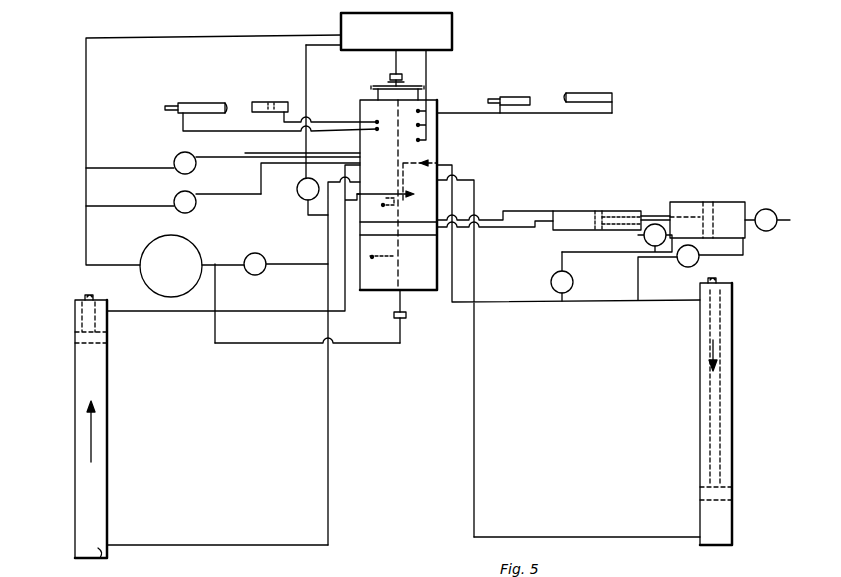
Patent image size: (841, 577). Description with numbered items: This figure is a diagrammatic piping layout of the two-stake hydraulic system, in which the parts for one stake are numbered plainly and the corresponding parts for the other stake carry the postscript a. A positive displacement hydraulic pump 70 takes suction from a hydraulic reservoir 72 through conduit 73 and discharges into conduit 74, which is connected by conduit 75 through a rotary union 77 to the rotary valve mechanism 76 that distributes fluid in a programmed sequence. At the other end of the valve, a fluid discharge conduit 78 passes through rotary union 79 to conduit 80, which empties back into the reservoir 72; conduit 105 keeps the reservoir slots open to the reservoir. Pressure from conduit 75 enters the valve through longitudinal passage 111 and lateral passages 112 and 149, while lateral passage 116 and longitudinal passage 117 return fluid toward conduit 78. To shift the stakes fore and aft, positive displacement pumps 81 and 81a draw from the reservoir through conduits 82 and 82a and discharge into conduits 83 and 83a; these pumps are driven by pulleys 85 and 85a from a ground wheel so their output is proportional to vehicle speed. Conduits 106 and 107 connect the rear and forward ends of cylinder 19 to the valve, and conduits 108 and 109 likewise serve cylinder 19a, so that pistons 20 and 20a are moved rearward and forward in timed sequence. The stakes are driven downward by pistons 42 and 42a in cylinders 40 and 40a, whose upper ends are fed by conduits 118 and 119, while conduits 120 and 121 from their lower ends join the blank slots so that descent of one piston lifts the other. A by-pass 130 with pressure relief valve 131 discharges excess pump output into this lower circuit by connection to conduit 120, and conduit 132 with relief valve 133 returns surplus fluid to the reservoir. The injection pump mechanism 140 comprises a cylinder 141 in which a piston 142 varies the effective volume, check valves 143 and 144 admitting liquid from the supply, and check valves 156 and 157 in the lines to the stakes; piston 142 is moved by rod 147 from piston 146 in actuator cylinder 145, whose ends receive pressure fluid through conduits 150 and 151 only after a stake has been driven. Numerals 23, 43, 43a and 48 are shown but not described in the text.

The cylinder 19 is at (208, 103).
The cylinder 19a is at (590, 84).
The piston 20 is at (268, 101).
The piston 20a is at (533, 84).
The conduit 23 is at (224, 563).
The cylinder 40 is at (77, 398).
The cylinder 40a is at (735, 362).
The piston 42 is at (80, 318).
The piston 42a is at (735, 490).
The outlet valve 43 is at (88, 296).
The second outlet valve 43a is at (727, 283).
The line 48 is at (179, 567).
The hydraulic pump 70 is at (150, 243).
The hydraulic reservoir 72 is at (440, 20).
The conduit 73 is at (88, 68).
The conduit 74 is at (212, 336).
The conduit 75 is at (405, 311).
The rotary valve mechanism 76 is at (443, 147).
The rotary union 77 is at (404, 320).
The fluid discharge conduit 78 is at (425, 88).
The rotary union 79 is at (404, 79).
The conduit 80 is at (400, 57).
The positive displacement pump 81 is at (178, 155).
The positive displacement pump 81a is at (195, 194).
The conduit 82 is at (115, 168).
The conduit 82a is at (127, 206).
The conduit 83 is at (245, 153).
The conduit 83a is at (261, 170).
The pulley 85 is at (372, 88).
The pulley 85a is at (388, 77).
The conduit 105 is at (410, 82).
The conduit 106 is at (243, 133).
The conduit 107 is at (358, 125).
The conduit 108 is at (465, 111).
The conduit 109 is at (580, 113).
The longitudinal passage 111 is at (399, 270).
The lateral passage 112 is at (428, 165).
The lateral passage 116 is at (394, 192).
The longitudinal passage 117 is at (397, 139).
The conduit 118 is at (293, 312).
The conduit 119 is at (595, 302).
The conduit 120 is at (217, 542).
The conduit 121 is at (596, 536).
The by-pass 130 is at (226, 264).
The pressure relief valve 131 is at (255, 252).
The conduit 132 is at (313, 217).
The relief valve 133 is at (297, 193).
The pump mechanism 140 is at (670, 185).
The cylinder 141 is at (745, 236).
The piston 142 is at (718, 210).
The check valve 143 is at (672, 213).
The check valve 144 is at (700, 262).
The cylinder 145 is at (583, 211).
The piston 146 is at (610, 215).
The rod 147 is at (622, 229).
The lateral passage 149 is at (392, 262).
The conduit 150 is at (537, 228).
The conduit 151 is at (527, 209).
The check valve 156 is at (551, 280).
The check valve 157 is at (772, 208).